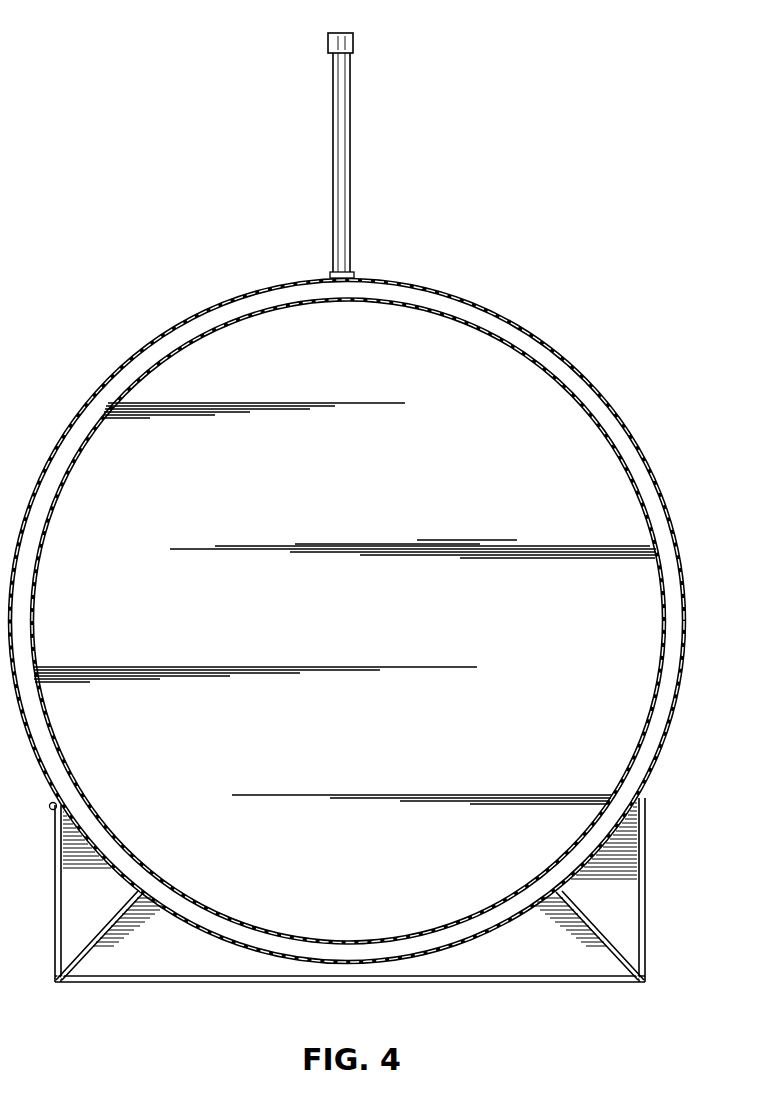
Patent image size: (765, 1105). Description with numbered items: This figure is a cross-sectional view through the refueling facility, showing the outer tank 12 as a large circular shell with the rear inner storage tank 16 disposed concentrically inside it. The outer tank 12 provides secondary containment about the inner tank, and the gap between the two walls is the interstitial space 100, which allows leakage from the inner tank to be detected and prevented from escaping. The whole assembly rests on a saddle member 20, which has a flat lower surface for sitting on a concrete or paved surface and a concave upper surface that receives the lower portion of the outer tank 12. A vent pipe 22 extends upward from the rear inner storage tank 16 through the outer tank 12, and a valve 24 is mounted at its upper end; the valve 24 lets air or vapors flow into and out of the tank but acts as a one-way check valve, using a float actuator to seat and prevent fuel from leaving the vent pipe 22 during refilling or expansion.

The outer tank 12 is at (238, 290).
The rear inner storage tank 16 is at (130, 375).
The interstitial space 100 is at (177, 335).
The saddle member 20 is at (172, 985).
The vent pipe 22 is at (350, 145).
The valve 24 is at (353, 45).